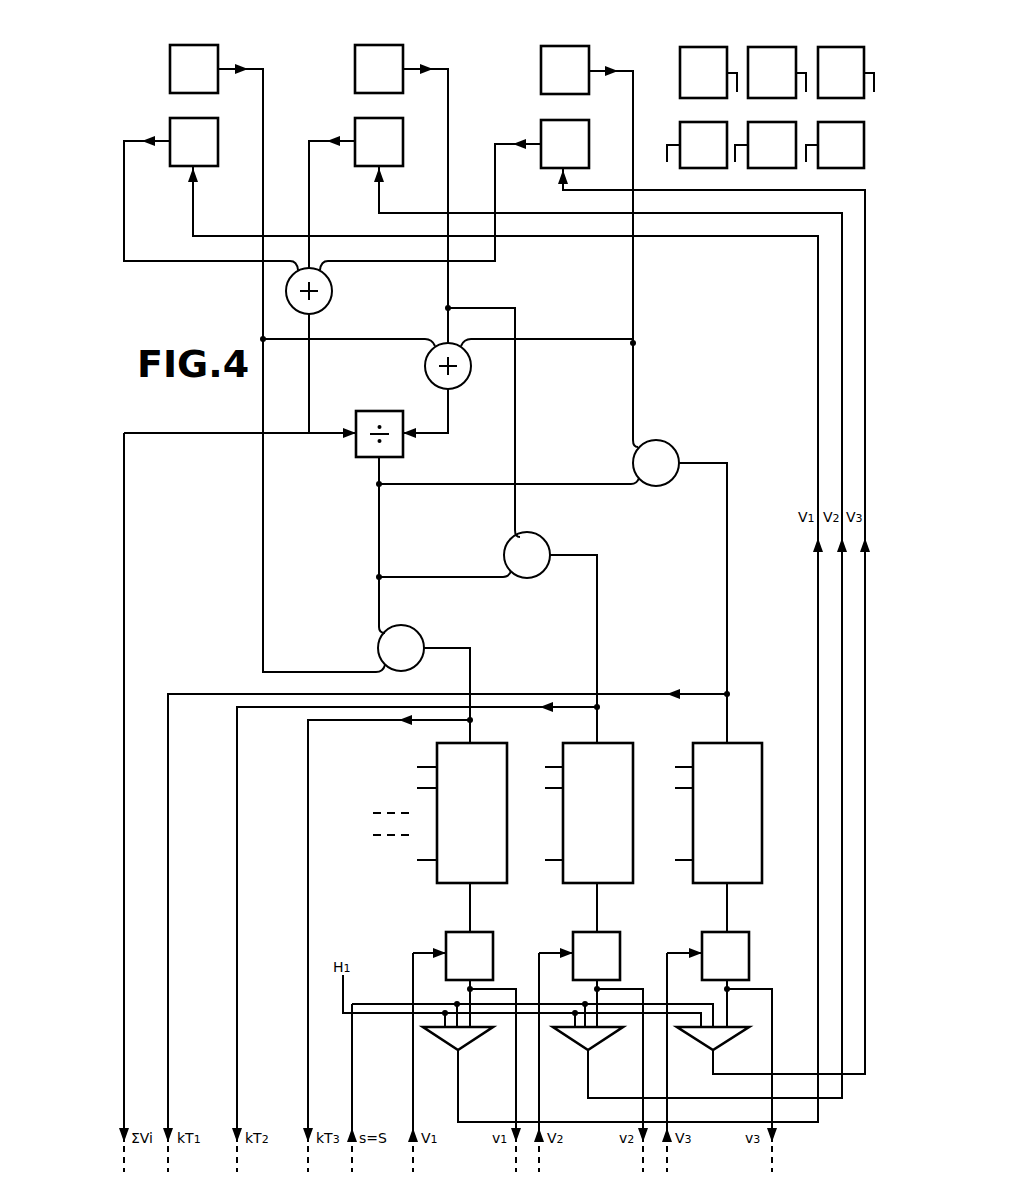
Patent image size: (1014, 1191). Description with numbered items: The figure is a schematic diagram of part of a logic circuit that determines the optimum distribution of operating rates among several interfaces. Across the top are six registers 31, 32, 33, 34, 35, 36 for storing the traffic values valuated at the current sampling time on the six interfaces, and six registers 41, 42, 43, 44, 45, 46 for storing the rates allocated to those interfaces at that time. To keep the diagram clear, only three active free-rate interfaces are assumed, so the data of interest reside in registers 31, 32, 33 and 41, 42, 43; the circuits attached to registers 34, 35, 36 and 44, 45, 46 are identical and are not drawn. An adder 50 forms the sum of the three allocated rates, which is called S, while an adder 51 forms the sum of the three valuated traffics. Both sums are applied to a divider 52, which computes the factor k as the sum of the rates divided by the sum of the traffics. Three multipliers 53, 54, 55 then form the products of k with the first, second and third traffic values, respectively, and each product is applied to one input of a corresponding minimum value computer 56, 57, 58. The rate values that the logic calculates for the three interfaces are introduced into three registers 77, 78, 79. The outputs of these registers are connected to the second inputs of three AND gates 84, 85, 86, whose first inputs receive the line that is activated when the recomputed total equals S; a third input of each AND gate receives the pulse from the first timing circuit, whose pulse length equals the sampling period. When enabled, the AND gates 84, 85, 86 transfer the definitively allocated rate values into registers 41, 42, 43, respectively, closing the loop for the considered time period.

The register 31 is at (170, 69).
The register 32 is at (356, 71).
The register 33 is at (547, 70).
The register 34 is at (682, 78).
The register 35 is at (774, 47).
The register 36 is at (864, 52).
The register 41 is at (171, 121).
The register 42 is at (356, 121).
The register 43 is at (541, 123).
The register 44 is at (682, 128).
The register 45 is at (764, 168).
The register 46 is at (864, 132).
The adder 50 is at (332, 291).
The adder 51 is at (471, 366).
The divider 52 is at (379, 411).
The multiplier 53 is at (418, 629).
The multiplier 54 is at (543, 539).
The multiplier 55 is at (675, 445).
The minimum value computer 56 is at (507, 745).
The minimum value computer 57 is at (633, 745).
The minimum value computer 58 is at (762, 745).
The register 77 is at (446, 941).
The register 78 is at (573, 941).
The register 79 is at (702, 941).
The AND gate 84 is at (479, 1040).
The AND gate 85 is at (609, 1040).
The AND gate 86 is at (735, 1040).